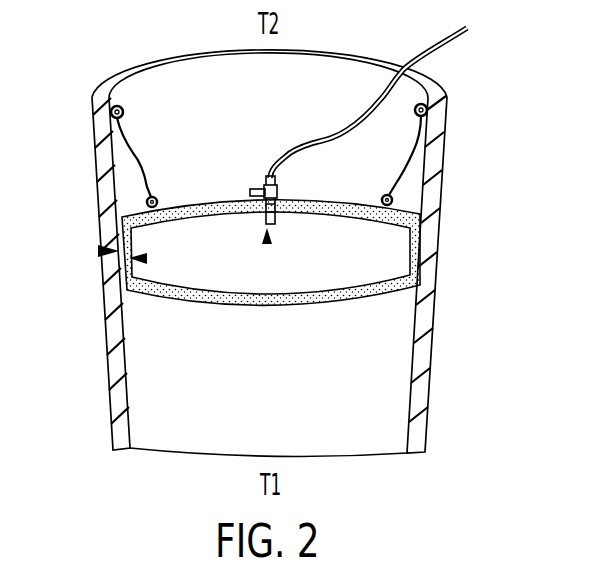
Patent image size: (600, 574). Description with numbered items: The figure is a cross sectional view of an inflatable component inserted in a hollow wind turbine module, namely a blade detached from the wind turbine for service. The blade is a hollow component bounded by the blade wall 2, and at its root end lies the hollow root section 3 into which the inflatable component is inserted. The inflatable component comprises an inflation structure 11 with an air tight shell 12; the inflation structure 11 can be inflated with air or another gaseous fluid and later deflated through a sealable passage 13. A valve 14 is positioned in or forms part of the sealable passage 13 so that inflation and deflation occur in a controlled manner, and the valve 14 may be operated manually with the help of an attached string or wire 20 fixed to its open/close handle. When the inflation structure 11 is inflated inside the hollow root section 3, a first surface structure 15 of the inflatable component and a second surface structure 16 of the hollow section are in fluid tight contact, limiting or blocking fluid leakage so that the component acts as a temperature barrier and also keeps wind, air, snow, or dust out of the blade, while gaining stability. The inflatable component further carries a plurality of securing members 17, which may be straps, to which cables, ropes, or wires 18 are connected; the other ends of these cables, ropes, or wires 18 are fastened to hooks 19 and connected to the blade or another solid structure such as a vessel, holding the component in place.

The blade wall 2 is at (428, 342).
The hollow root section 3 is at (281, 419).
The inflation structure 11 is at (408, 250).
The air tight shell 12 is at (297, 297).
The sealable passage 13 is at (267, 243).
The valve 14 is at (278, 173).
The first surface structure 15 is at (148, 258).
The second surface structure 16 is at (100, 252).
The securing members 17 is at (160, 202).
The cables, ropes, or wires 18 is at (140, 163).
The hooks 19 is at (124, 110).
The string or wire 20 is at (333, 137).